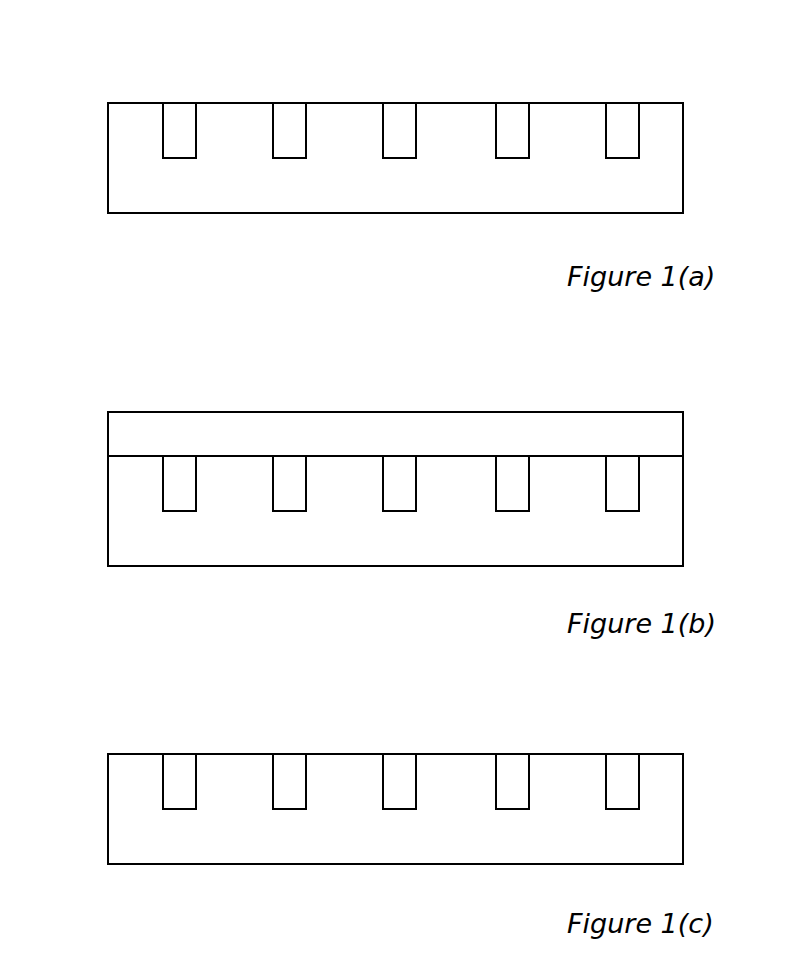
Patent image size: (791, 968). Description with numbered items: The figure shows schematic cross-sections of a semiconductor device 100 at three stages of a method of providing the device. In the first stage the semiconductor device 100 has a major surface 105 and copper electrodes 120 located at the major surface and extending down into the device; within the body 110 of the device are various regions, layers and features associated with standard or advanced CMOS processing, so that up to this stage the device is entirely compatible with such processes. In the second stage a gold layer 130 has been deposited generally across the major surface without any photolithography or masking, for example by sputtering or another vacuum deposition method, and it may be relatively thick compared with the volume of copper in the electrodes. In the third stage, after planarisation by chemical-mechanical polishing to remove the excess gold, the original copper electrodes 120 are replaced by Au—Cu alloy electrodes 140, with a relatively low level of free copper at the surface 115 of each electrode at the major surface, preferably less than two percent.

In FIG. 1A, the semiconductor device 100 is at (140, 50).
In FIG. 1B, the semiconductor device 100 is at (140, 393).
In FIG. 1C, the semiconductor device 100 is at (140, 734).
In FIG. 1A, the major surface 105 is at (655, 102).
In FIG. 1A, the body 110 is at (128, 195).
In FIG. 1B, the body 110 is at (133, 535).
In FIG. 1C, the body 110 is at (133, 833).
In FIG. 1A, the copper electrodes 120 is at (397, 159).
In FIG. 1B, the copper electrodes 120 is at (398, 513).
In FIG. 1B, the gold layer 130 is at (387, 420).
In FIG. 1B, the surface of the electrode 115 is at (632, 455).
In FIG. 1C, the Au—Cu alloy electrodes 140 is at (398, 811).